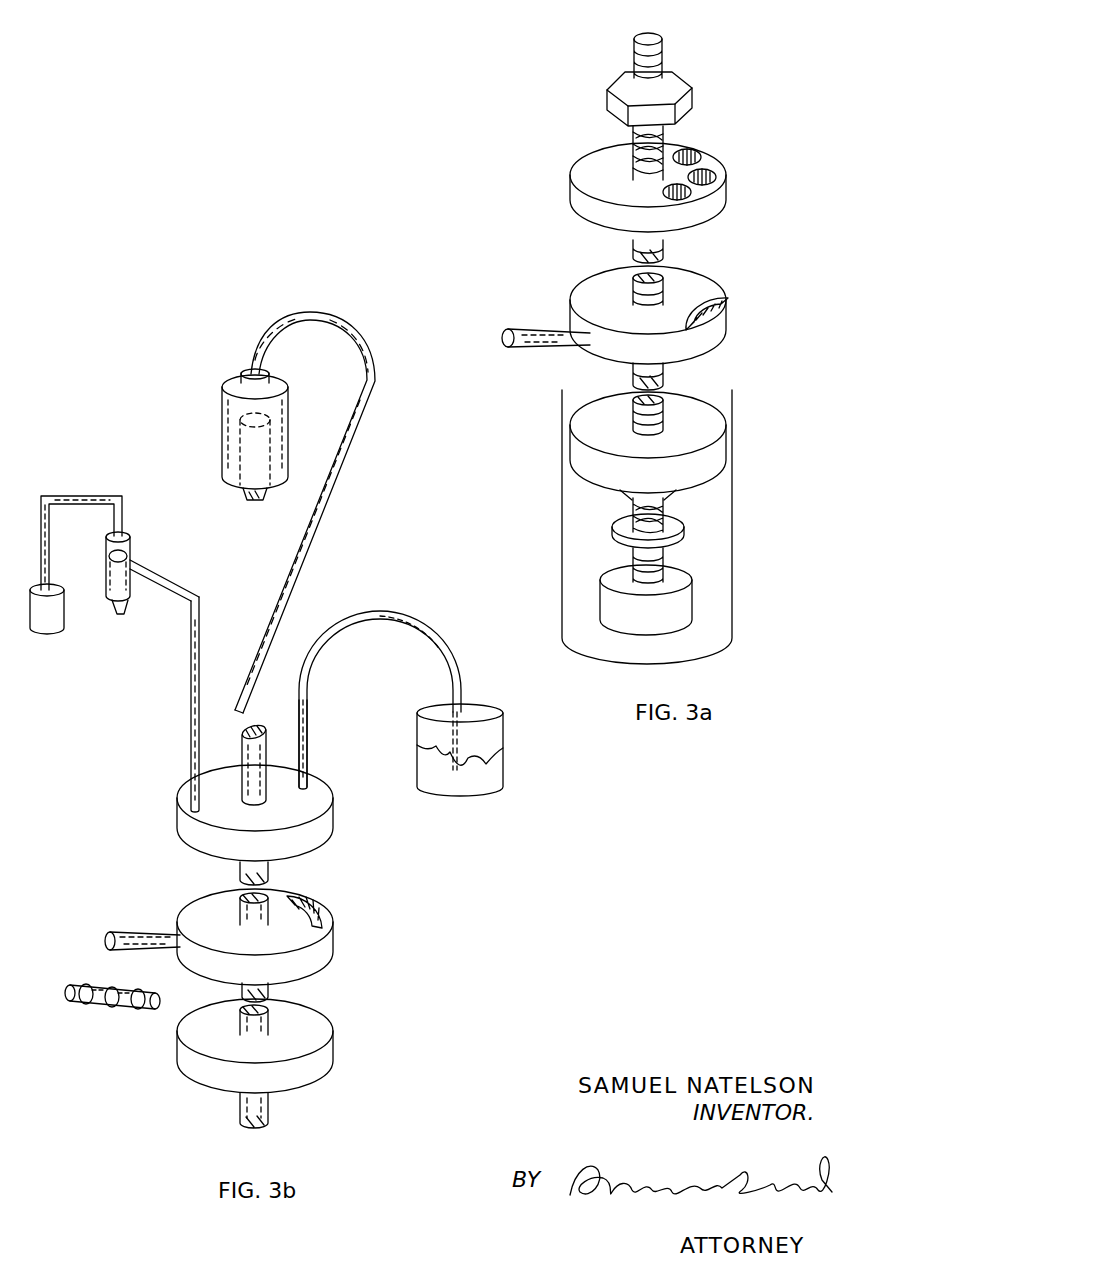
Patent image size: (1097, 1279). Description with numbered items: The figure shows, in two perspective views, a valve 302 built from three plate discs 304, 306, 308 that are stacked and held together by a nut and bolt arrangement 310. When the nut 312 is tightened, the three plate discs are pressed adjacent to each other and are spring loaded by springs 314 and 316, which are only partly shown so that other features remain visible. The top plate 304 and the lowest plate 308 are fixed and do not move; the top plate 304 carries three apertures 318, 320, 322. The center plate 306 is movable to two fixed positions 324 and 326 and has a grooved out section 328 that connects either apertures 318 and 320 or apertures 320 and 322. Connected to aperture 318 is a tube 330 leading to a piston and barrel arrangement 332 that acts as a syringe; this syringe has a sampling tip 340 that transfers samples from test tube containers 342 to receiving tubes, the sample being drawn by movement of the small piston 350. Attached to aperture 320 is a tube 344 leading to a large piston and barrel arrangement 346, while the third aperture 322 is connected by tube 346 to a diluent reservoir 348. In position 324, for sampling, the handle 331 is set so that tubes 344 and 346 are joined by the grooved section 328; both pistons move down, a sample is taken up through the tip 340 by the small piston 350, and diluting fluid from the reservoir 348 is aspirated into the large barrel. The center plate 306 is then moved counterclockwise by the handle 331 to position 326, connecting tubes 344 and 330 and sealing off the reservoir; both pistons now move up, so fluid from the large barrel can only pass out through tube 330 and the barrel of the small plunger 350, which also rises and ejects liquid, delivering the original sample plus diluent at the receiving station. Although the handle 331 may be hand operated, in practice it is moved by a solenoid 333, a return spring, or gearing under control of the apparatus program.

In FIG. 3A, the valve 302 is at (810, 459).
In FIG. 3A, the top plate disc 304 is at (586, 207).
In FIG. 3B, the top plate disc 304 is at (333, 821).
In FIG. 3A, the center plate disc 306 is at (598, 284).
In FIG. 3B, the center plate disc 306 is at (333, 949).
In FIG. 3A, the lowest plate disc 308 is at (580, 422).
In FIG. 3B, the lowest plate disc 308 is at (333, 1046).
In FIG. 3A, the nut and bolt arrangement 310 is at (663, 53).
In FIG. 3A, the nut 312 is at (688, 97).
In FIG. 3A, the spring 314 is at (636, 134).
In FIG. 3A, the spring 316 is at (630, 503).
In FIG. 3A, the aperture 318 is at (702, 156).
In FIG. 3B, the aperture 318 is at (190, 806).
In FIG. 3A, the aperture 320 is at (717, 177).
In FIG. 3B, the aperture 320 is at (244, 755).
In FIG. 3A, the aperture 322 is at (692, 192).
In FIG. 3B, the aperture 322 is at (308, 786).
In FIG. 3A, the fixed position 324 is at (495, 326).
In FIG. 3A, the fixed position 326 is at (599, 386).
In FIG. 3A, the grooved out section 328 is at (730, 306).
In FIG. 3B, the grooved out section 328 is at (323, 912).
In FIG. 3B, the tube 330 is at (163, 580).
In FIG. 3A, the handle 331 is at (503, 341).
In FIG. 3B, the handle 331 is at (106, 950).
In FIG. 3B, the piston and barrel arrangement 332 is at (131, 556).
In FIG. 3B, the solenoid 333 is at (150, 1010).
In FIG. 3B, the sampling tip 340 is at (50, 612).
In FIG. 3B, the test tube container 342 is at (93, 563).
In FIG. 3B, the tube 344 is at (342, 470).
In FIG. 3B, the large piston and barrel arrangement 346 is at (221, 393).
In FIG. 3B, the diluent reservoir 348 is at (505, 746).
In FIG. 3B, the small piston 350 is at (121, 612).